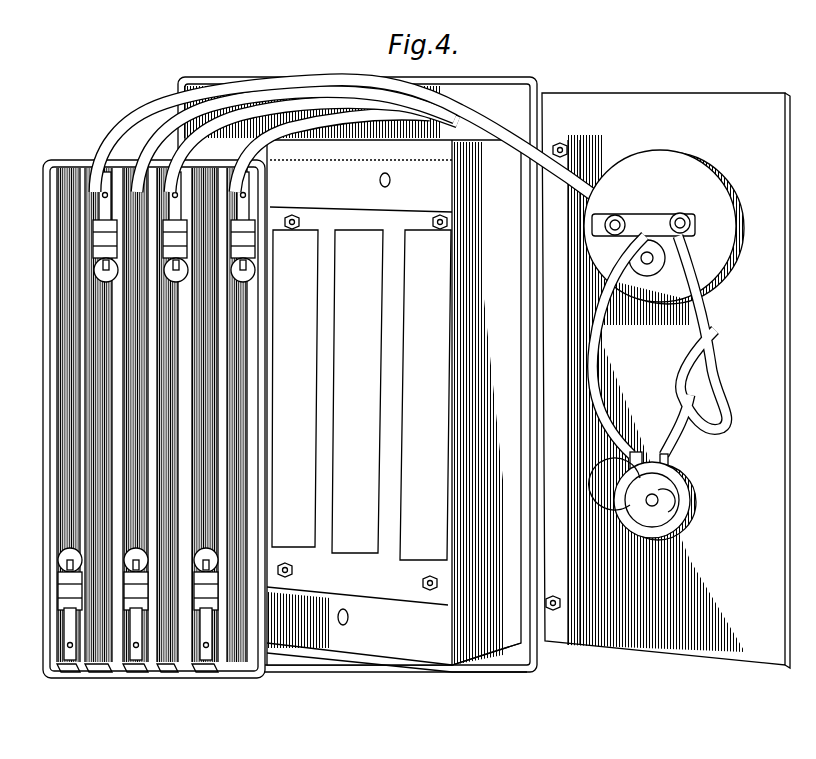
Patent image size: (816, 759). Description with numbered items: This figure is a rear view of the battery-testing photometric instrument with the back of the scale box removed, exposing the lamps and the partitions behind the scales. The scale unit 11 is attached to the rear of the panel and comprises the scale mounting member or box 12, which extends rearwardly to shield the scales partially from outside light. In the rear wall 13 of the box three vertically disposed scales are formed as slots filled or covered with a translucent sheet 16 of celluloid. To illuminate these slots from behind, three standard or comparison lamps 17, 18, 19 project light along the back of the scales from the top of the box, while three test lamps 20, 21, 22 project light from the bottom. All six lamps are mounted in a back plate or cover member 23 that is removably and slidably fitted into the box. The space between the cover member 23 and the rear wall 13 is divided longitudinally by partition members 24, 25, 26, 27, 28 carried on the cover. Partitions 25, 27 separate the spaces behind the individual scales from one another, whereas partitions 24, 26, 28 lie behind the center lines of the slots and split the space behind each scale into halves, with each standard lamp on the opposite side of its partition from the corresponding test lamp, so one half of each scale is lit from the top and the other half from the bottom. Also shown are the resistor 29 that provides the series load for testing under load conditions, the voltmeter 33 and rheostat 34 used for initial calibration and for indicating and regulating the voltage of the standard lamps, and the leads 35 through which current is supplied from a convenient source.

The scale unit 11 is at (394, 402).
The scale mounting member or box 12 is at (474, 660).
The rear wall 13 is at (357, 605).
The sheet of celluloid 16 is at (400, 552).
The standard lamp 17 is at (255, 274).
The standard lamp 18 is at (172, 272).
The standard lamp 19 is at (95, 265).
The test lamp 20 is at (218, 544).
The test lamp 21 is at (142, 551).
The test lamp 22 is at (62, 561).
The back plate or cover member 23 is at (47, 676).
The partition member 24 is at (230, 664).
The partition member 25 is at (190, 664).
The partition member 26 is at (153, 664).
The partition member 27 is at (115, 666).
The partition member 28 is at (82, 668).
The resistor 29 is at (530, 85).
The voltmeter 33 is at (733, 250).
The rheostat 34 is at (692, 506).
The leads 35 is at (722, 378).